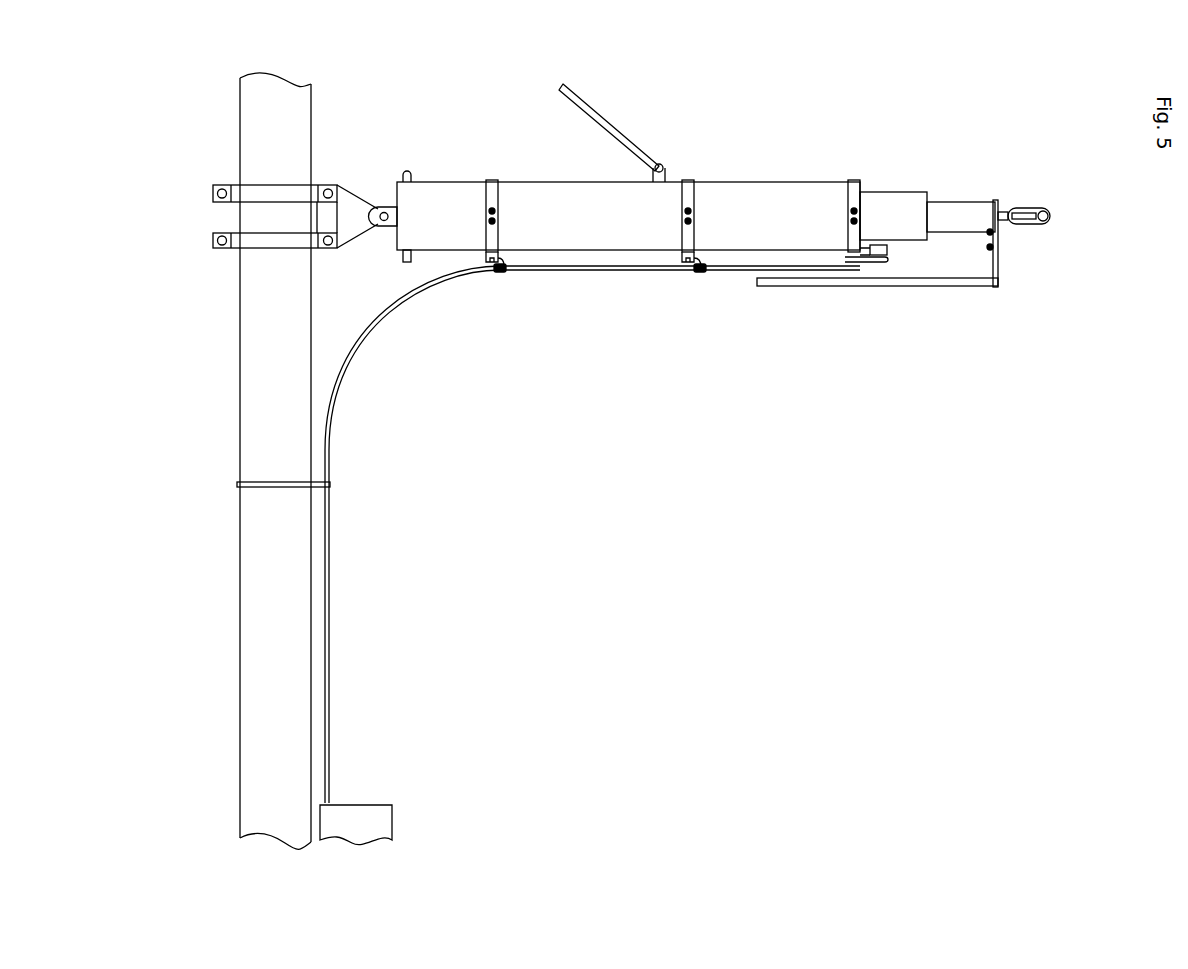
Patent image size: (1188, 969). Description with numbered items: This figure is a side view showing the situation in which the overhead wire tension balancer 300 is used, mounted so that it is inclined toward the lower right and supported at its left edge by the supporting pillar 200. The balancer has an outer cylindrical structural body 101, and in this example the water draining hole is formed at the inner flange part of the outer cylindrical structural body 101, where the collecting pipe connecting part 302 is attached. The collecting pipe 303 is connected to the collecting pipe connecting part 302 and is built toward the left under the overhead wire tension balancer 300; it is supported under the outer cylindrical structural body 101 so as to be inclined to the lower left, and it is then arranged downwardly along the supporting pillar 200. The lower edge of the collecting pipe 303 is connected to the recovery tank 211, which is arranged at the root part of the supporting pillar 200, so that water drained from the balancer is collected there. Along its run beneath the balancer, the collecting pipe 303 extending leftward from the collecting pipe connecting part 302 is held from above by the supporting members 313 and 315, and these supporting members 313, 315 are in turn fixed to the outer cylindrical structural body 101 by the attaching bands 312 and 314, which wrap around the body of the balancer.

The supporting pillar 200 is at (256, 337).
The recovery tank 211 is at (386, 830).
The overhead wire tension balancer 300 is at (723, 194).
The outer cylindrical structural body 101 is at (818, 200).
The collecting pipe connecting part 302 is at (890, 251).
The collecting pipe 303 is at (637, 272).
The attaching band 312 is at (690, 180).
The supporting member 313 is at (702, 282).
The attaching band 314 is at (496, 180).
The supporting member 315 is at (500, 284).